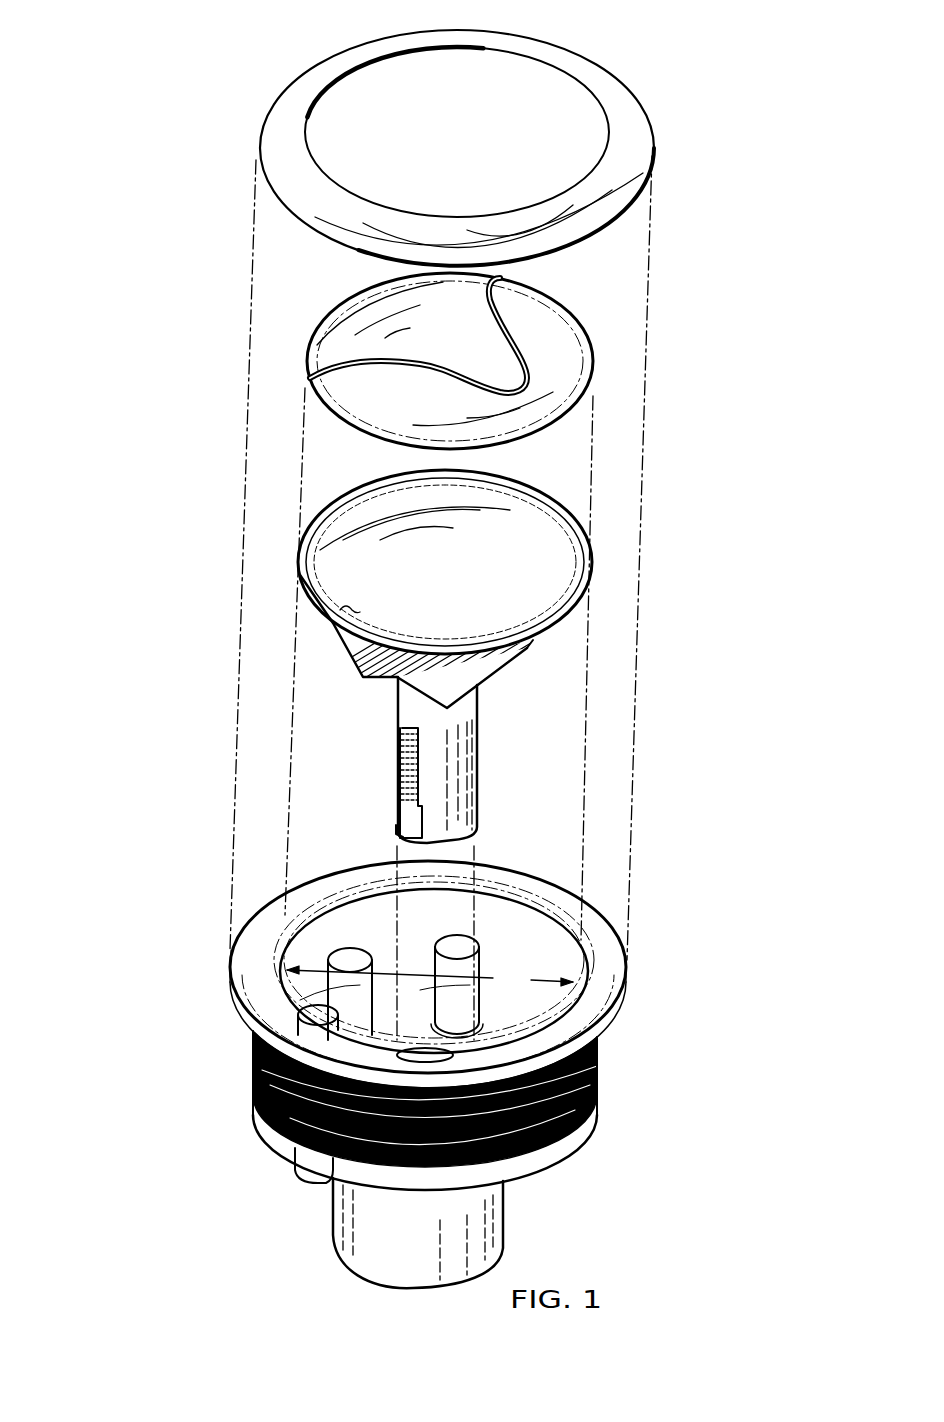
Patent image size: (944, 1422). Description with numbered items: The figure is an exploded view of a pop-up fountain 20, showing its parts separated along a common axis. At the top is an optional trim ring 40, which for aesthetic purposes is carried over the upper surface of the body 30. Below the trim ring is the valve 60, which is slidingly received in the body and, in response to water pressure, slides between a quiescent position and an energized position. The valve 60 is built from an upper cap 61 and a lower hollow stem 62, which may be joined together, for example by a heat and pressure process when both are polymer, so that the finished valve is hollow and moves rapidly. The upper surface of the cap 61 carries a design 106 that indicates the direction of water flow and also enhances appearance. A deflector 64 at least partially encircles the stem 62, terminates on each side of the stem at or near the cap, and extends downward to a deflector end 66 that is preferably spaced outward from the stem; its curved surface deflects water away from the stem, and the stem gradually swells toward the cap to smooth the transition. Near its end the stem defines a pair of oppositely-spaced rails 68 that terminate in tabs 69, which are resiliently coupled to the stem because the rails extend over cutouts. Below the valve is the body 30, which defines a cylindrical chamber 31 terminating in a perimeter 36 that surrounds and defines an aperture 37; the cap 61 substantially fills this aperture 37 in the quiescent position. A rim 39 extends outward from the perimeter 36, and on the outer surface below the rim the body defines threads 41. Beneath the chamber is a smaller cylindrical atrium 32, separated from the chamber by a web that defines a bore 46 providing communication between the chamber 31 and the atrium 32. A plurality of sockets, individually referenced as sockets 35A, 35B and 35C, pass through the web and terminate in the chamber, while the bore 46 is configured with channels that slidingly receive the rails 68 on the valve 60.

The fountain 20 is at (707, 350).
The body 30 is at (585, 1141).
The chamber 31 is at (540, 994).
The atrium 32 is at (360, 1290).
The socket 35A is at (317, 1005).
The socket 35B is at (327, 966).
The socket 35C is at (450, 902).
The perimeter 36 is at (530, 917).
The aperture 37 is at (430, 979).
The rim 39 is at (233, 957).
The trim ring 40 is at (345, 42).
The threads 41 is at (598, 1084).
The bore 46 is at (411, 1048).
The valve 60 is at (305, 828).
The cap 61 is at (596, 361).
The stem 62 is at (480, 745).
The deflector 64 is at (533, 650).
The deflector end 66 is at (496, 694).
The rails 68 is at (403, 787).
The tabs 69 is at (393, 830).
The design 106 is at (505, 343).